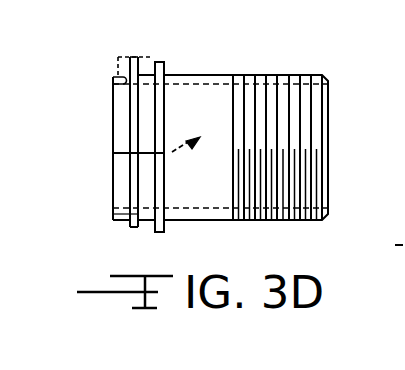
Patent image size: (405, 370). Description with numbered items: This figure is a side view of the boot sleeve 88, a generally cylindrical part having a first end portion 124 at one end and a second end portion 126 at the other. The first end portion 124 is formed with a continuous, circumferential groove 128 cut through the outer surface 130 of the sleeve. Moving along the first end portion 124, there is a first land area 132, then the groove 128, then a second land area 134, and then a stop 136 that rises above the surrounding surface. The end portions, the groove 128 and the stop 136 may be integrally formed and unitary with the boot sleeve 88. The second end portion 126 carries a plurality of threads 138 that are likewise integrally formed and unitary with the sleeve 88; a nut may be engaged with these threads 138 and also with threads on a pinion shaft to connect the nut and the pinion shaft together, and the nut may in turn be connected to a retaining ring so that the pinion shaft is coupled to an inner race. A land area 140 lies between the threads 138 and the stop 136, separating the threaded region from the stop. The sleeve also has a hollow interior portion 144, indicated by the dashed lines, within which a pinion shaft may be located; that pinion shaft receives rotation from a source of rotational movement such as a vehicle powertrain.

The first end portion 124 is at (102, 70).
The second end portion 126 is at (336, 102).
The groove 128 is at (130, 226).
The outer surface 130 is at (202, 221).
The first land area 132 is at (123, 220).
The second land area 134 is at (145, 221).
The stop 136 is at (161, 61).
The threads 138 is at (290, 219).
The land area 140 is at (203, 74).
The hollow interior portion 144 is at (120, 153).
The boot sleeve 88 is at (280, 74).